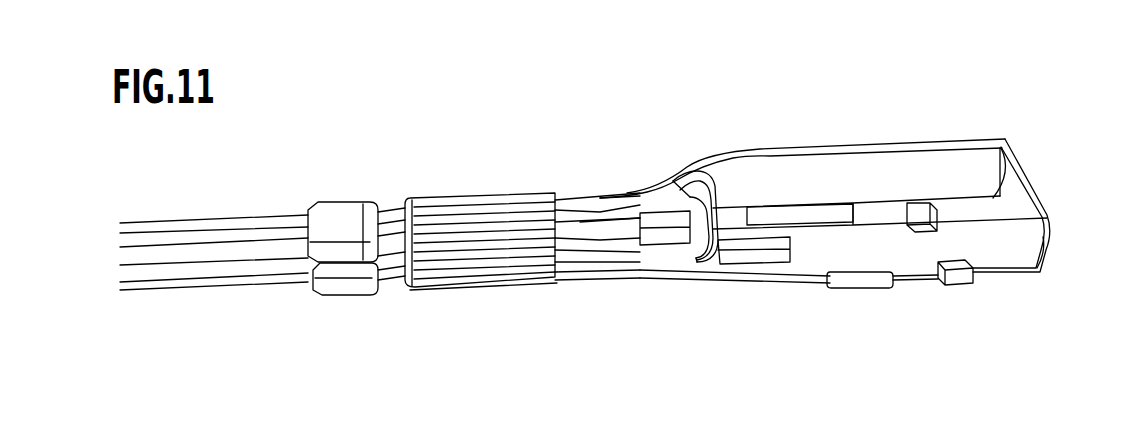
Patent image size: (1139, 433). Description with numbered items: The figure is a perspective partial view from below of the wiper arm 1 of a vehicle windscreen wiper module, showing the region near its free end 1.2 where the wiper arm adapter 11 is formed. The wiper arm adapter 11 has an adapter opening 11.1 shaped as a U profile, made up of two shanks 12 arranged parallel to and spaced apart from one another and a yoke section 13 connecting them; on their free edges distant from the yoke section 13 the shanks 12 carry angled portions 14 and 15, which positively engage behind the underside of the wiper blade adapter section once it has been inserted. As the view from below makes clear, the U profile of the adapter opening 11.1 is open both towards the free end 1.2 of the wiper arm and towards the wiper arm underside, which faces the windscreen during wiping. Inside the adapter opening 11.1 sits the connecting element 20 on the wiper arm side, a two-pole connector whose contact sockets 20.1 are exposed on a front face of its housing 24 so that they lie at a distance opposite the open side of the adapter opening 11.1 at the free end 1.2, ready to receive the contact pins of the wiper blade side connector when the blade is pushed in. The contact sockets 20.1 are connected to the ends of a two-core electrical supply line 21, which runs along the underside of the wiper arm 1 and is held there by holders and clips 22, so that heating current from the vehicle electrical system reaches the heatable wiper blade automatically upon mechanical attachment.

The wiper arm 1 is at (417, 182).
The free end 1.2 is at (905, 132).
The wiper arm adapter 11 is at (987, 133).
The adapter opening 11.1 is at (998, 228).
The shanks 12 is at (778, 177).
The yoke section 13 is at (1013, 177).
The angled portion 14 is at (813, 217).
The angled portion 15 is at (917, 208).
The connecting element 20 is at (737, 260).
The contact sockets 20.1 is at (782, 233).
The electrical supply line 21 is at (498, 245).
The clips 22 is at (345, 202).
The housing 24 is at (683, 240).